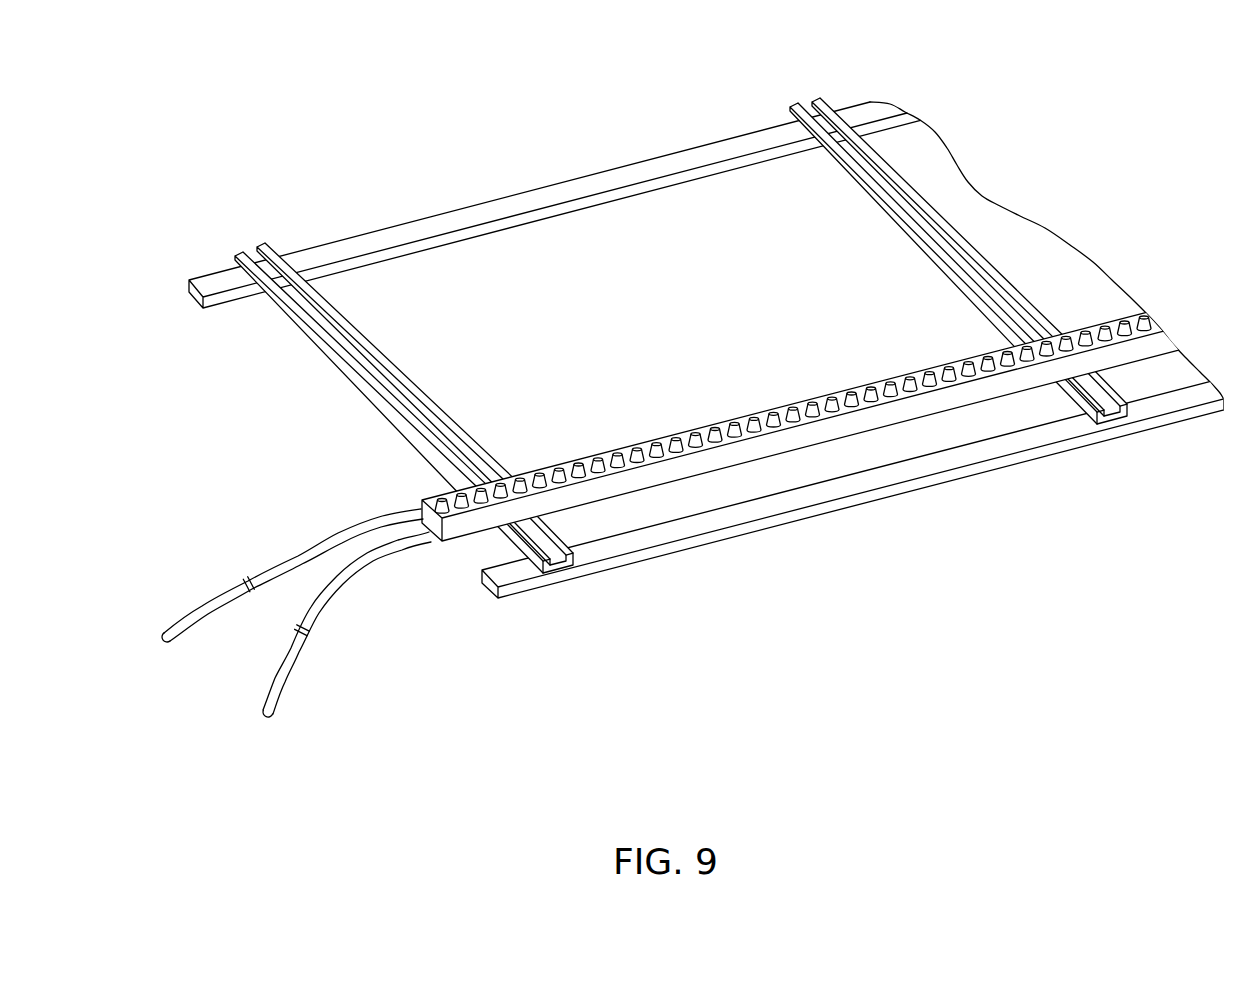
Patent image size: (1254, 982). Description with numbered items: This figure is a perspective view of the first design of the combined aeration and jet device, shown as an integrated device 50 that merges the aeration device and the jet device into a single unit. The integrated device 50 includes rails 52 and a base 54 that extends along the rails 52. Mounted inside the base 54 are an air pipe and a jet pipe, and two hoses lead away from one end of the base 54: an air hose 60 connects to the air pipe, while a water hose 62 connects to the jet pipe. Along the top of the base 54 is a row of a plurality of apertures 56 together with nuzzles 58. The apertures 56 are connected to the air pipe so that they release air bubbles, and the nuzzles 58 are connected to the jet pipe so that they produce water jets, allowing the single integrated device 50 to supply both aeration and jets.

The integrated device 50 is at (606, 148).
The rails 52 is at (945, 228).
The base 54 is at (727, 464).
The apertures 56 is at (440, 507).
The nuzzles 58 is at (460, 507).
The air hose 60 is at (288, 568).
The water hose 62 is at (323, 618).